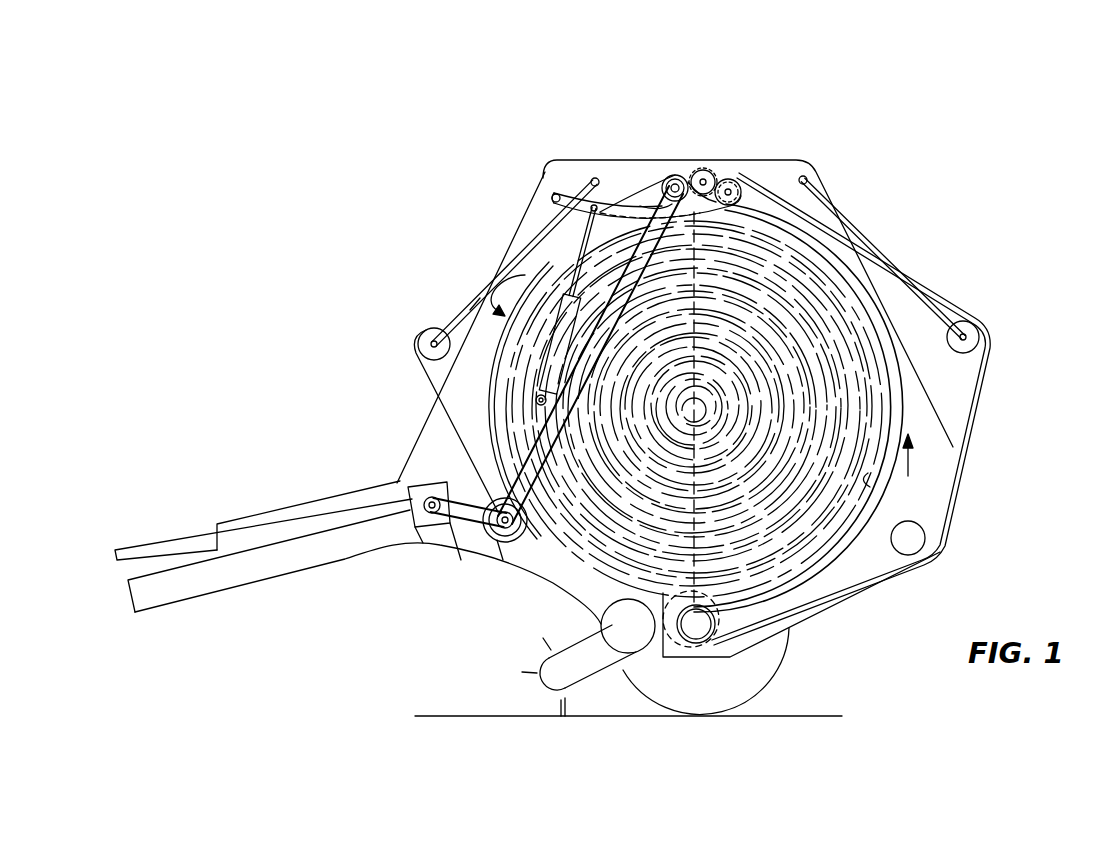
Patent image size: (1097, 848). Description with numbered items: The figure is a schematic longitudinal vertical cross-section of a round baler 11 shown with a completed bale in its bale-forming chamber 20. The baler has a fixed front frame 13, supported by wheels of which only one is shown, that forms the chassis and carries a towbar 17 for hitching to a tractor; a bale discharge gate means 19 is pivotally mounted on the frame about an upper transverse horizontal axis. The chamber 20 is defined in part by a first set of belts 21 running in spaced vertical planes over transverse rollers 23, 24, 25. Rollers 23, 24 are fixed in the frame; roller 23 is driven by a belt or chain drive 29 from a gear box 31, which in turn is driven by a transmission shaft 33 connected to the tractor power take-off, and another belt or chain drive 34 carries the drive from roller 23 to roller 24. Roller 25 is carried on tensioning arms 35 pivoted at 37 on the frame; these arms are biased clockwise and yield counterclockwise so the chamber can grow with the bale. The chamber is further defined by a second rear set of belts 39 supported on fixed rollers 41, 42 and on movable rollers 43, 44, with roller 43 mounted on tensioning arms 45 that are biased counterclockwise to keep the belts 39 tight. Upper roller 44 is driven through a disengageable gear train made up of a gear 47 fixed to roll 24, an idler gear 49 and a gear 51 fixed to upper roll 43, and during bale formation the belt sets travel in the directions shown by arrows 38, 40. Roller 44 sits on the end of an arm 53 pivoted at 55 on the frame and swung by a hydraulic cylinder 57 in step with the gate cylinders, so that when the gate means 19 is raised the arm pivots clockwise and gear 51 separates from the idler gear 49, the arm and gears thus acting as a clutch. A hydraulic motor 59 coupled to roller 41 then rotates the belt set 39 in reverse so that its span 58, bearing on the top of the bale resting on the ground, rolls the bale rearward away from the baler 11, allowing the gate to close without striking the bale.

The round baler 11 is at (812, 104).
The fixed front frame 13 is at (540, 617).
The towbar 17 is at (274, 580).
The bale discharge gate means 19 is at (972, 486).
The bale-forming chamber 20 is at (750, 446).
The first set of belts 21 is at (421, 370).
The roller 23 is at (504, 542).
The roller 24 is at (648, 182).
The roller 25 is at (428, 343).
The belt or chain drive 29 is at (463, 527).
The gear box 31 is at (418, 540).
The transmission shaft 33 is at (152, 548).
The belt or chain drive 34 is at (547, 496).
The tensioning arms 35 is at (463, 300).
The pivot 37 is at (594, 178).
The arrow 38 is at (498, 310).
The second rear set of belts 39 is at (789, 177).
The arrow 40 is at (924, 455).
The fixed roller 41 is at (697, 630).
The fixed roller 42 is at (910, 539).
The movably mounted roller 43 is at (970, 334).
The upper roller 44 is at (759, 184).
The tensioning arms 45 is at (856, 232).
The gear 47 is at (678, 172).
The idler gear 49 is at (707, 170).
The gear 51 is at (736, 180).
The arm 53 is at (609, 198).
The pivot 55 is at (554, 192).
The hydraulic cylinder 57 is at (541, 377).
The span 58 is at (870, 487).
The hydraulic motor 59 is at (663, 640).